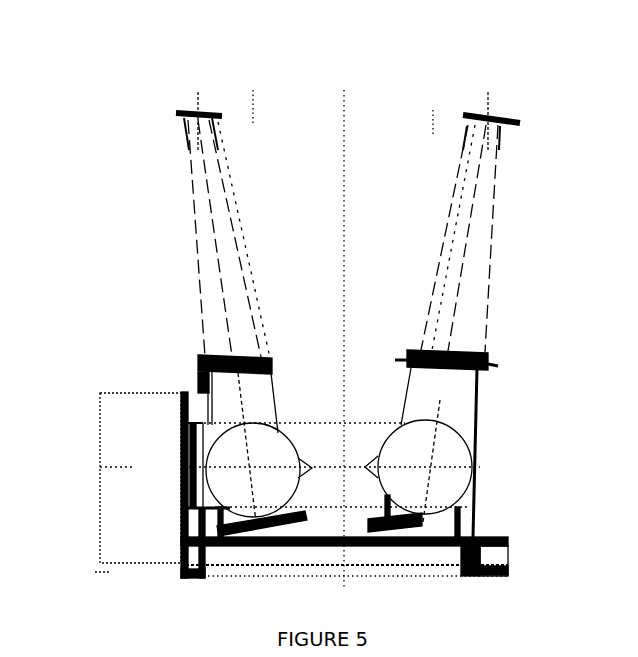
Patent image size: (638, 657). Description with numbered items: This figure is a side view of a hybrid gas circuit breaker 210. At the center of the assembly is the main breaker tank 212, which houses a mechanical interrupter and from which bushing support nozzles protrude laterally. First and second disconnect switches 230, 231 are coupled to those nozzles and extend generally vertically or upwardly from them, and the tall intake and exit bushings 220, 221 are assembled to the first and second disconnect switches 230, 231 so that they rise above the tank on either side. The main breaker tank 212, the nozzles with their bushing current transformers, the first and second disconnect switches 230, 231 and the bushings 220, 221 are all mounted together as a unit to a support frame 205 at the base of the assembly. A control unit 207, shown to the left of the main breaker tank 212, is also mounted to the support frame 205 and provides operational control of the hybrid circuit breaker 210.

The hybrid gas circuit breaker 210 is at (345, 57).
The intake bushing 220 is at (193, 186).
The exit bushing 221 is at (490, 222).
The first disconnect switch 230 is at (277, 388).
The second disconnect switch 231 is at (468, 407).
The main breaker tank 212 is at (292, 422).
The control unit 207 is at (100, 428).
The support frame 205 is at (258, 553).